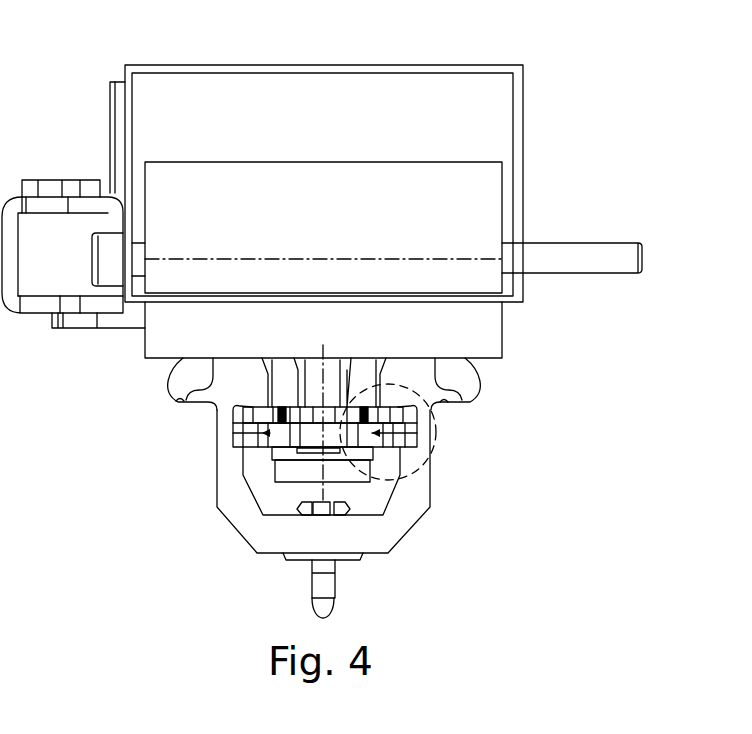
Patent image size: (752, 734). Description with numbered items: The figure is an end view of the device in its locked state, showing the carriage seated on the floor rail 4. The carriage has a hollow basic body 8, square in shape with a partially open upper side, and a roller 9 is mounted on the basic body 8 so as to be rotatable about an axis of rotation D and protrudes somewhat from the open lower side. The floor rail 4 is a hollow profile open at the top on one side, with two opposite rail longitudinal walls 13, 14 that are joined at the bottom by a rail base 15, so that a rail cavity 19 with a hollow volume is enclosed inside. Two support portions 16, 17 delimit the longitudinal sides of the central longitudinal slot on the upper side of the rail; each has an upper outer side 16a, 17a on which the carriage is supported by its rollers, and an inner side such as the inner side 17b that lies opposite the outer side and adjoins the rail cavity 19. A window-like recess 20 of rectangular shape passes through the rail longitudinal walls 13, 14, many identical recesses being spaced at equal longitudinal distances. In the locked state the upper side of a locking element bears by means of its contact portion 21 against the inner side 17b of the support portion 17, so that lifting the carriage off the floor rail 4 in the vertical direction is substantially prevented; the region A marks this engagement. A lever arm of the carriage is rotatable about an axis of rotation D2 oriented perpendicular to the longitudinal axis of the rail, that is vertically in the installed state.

The floor rail 4 is at (518, 396).
The basic body 8 is at (452, 63).
The roller 9 is at (478, 201).
The rail longitudinal wall 13 is at (432, 479).
The rail longitudinal wall 14 is at (225, 480).
The rail base 15 is at (272, 545).
The support portion 16 is at (472, 384).
The upper outer side 16a is at (434, 353).
The support portion 17 is at (187, 367).
The upper outer side 17a is at (218, 357).
The inner side 17b is at (238, 364).
The rail cavity 19 is at (246, 501).
The recess 20 is at (245, 411).
The contact portion 21 is at (220, 443).
The detail region A is at (437, 441).
The axis of rotation D is at (322, 256).
The axis of rotation D2 is at (326, 356).